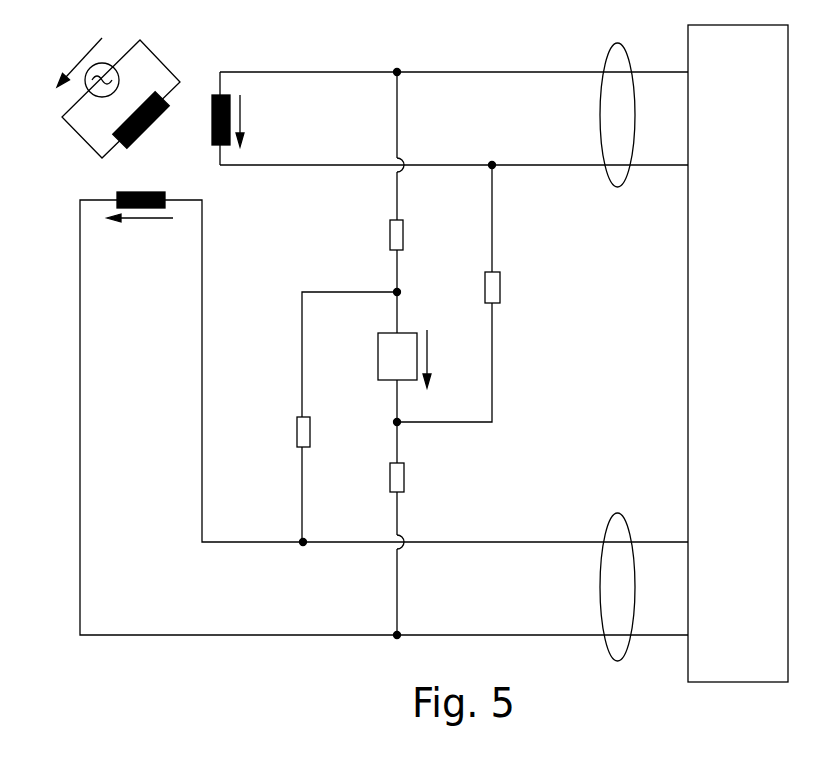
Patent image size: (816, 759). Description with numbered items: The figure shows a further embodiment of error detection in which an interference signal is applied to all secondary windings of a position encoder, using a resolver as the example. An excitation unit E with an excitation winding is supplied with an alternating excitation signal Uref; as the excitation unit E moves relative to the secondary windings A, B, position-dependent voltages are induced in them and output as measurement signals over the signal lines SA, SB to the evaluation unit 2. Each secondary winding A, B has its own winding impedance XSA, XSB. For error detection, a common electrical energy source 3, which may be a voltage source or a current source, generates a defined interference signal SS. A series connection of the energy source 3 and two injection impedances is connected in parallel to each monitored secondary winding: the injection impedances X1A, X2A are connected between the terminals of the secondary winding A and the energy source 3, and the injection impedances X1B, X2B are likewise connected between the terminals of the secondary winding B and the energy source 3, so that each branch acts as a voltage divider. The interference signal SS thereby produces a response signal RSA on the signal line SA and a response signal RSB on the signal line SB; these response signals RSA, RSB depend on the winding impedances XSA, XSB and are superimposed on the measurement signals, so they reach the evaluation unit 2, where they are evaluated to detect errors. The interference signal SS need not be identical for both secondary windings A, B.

The evaluation unit 2 is at (749, 361).
The electrical energy source 3 is at (408, 366).
The secondary winding A is at (217, 93).
The secondary winding B is at (117, 193).
The excitation unit E is at (141, 113).
The excitation signal Uref is at (68, 59).
The winding impedance XSA is at (195, 129).
The winding impedance XSB is at (146, 182).
The response signal RSA is at (264, 121).
The response signal RSB is at (140, 237).
The injection impedance X1A is at (421, 237).
The injection impedance X2A is at (519, 286).
The injection impedance X1B is at (278, 427).
The injection impedance X2B is at (426, 477).
The interference signal SS is at (442, 359).
The signal line SA is at (617, 188).
The signal line SB is at (618, 513).